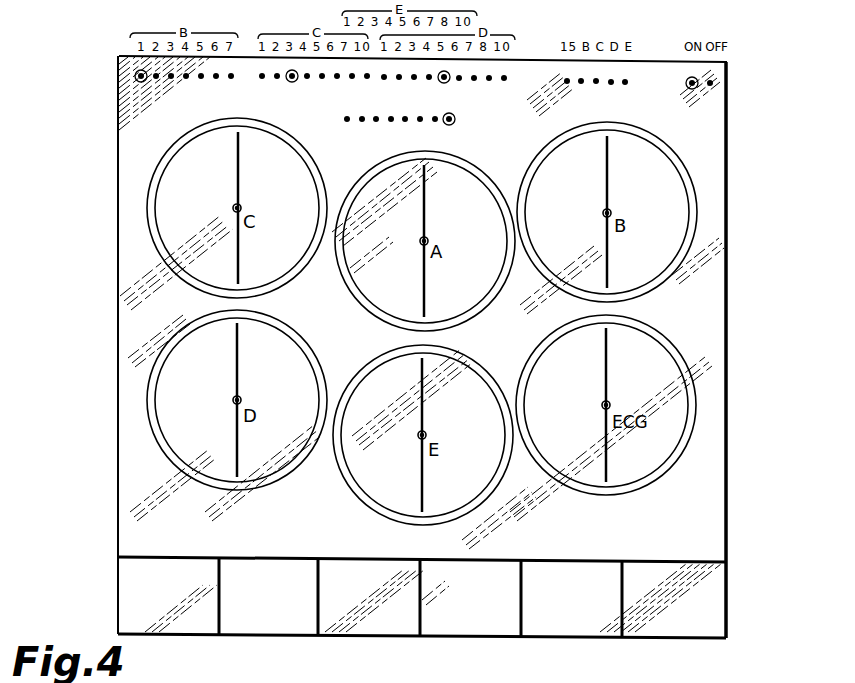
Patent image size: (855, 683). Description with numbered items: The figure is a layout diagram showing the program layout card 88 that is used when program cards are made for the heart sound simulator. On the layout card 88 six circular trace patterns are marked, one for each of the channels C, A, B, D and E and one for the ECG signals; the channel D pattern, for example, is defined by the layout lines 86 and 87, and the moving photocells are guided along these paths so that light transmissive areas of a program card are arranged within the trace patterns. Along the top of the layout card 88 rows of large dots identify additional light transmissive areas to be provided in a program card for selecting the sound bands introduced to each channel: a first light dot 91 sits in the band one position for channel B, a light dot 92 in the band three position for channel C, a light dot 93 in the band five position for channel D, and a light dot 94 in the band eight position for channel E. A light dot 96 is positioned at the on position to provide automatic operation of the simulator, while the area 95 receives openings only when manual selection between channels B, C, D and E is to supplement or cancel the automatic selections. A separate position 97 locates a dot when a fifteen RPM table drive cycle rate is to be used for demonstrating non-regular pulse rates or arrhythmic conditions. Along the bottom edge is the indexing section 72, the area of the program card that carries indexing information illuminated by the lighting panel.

The indexing section 72 is at (729, 562).
The layout line 86 is at (303, 355).
The layout line 87 is at (303, 337).
The layout card 88 is at (707, 300).
The light dot 91 is at (136, 80).
The light dot 92 is at (292, 82).
The light dot 93 is at (448, 82).
The light dot 94 is at (454, 123).
The area 95 is at (592, 86).
The light dot 96 is at (698, 88).
The position 97 is at (567, 87).